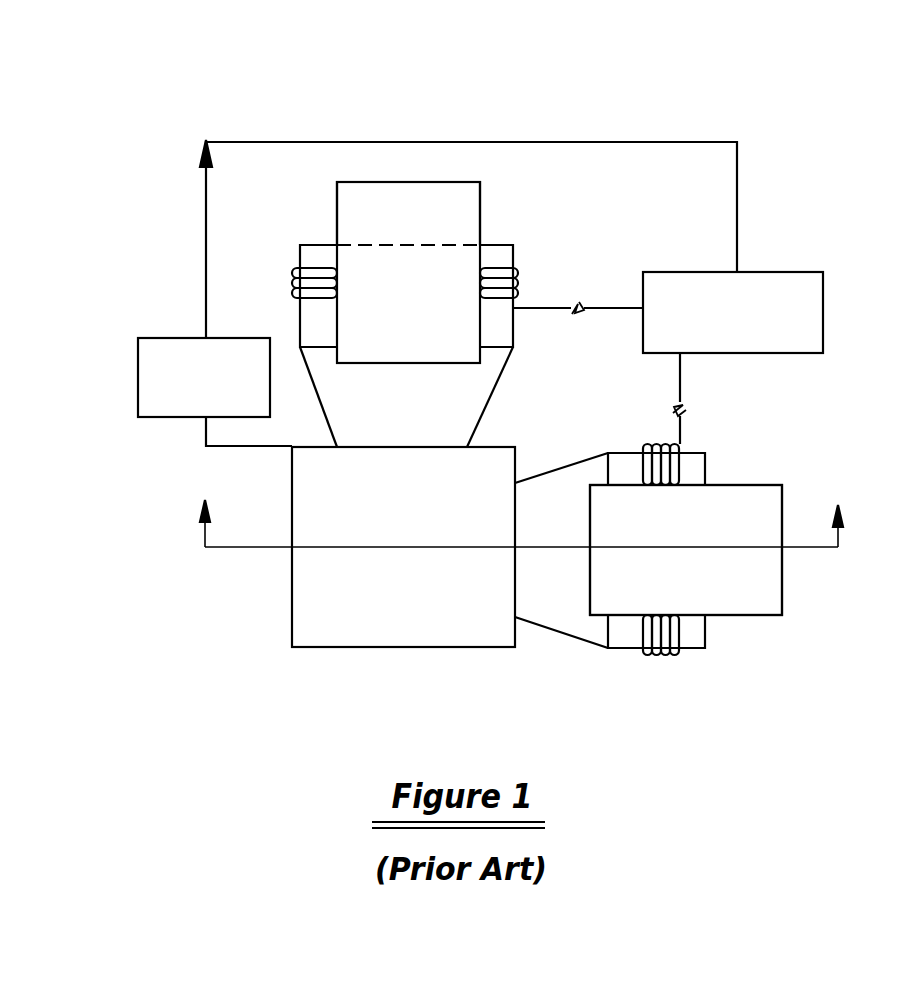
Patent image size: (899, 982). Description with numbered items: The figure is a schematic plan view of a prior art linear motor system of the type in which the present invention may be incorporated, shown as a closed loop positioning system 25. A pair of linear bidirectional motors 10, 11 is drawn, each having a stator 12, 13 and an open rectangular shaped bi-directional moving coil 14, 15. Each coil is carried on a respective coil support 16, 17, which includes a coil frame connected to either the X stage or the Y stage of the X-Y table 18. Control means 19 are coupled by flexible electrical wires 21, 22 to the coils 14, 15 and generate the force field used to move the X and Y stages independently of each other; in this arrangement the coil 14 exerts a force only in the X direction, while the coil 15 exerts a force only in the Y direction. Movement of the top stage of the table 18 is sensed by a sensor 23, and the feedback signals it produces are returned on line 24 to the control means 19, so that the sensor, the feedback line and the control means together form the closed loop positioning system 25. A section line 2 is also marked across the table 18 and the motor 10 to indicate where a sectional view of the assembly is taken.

The closed loop positioning system 25 is at (539, 86).
The line 24 is at (737, 173).
The sensor 23 is at (138, 388).
The stator 13 is at (337, 198).
The linear bidirectional motor 11 is at (419, 299).
The bi-directional moving coil 15 is at (292, 282).
The coil support 17 is at (498, 393).
The flexible electrical wire 22 is at (538, 308).
The control means 19 is at (823, 307).
The flexible electrical wire 21 is at (680, 393).
The bi-directional moving coil 14 is at (672, 472).
The linear bidirectional motor 10 is at (677, 524).
The stator 12 is at (715, 563).
The coil support 16 is at (567, 633).
The X-Y table 18 is at (392, 506).
The section line 2- 2 is at (525, 510).